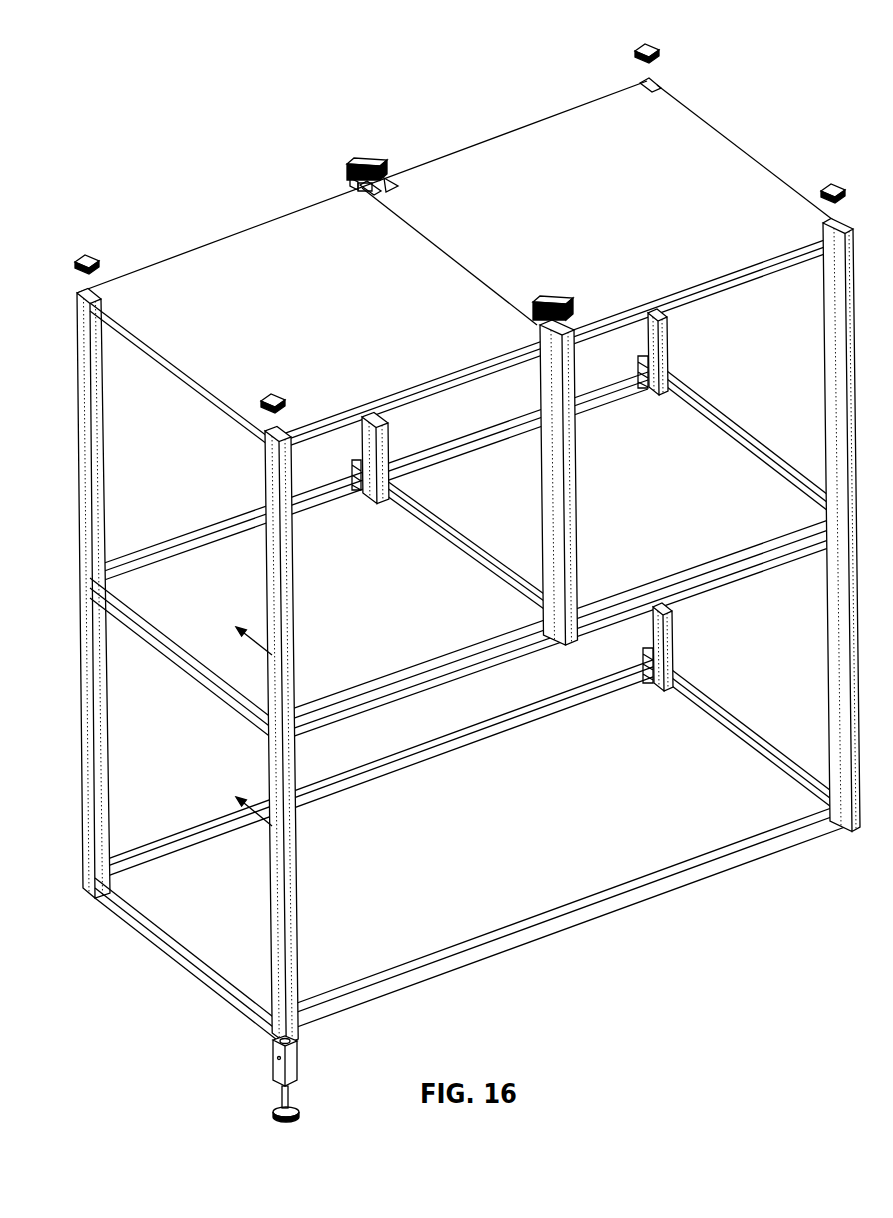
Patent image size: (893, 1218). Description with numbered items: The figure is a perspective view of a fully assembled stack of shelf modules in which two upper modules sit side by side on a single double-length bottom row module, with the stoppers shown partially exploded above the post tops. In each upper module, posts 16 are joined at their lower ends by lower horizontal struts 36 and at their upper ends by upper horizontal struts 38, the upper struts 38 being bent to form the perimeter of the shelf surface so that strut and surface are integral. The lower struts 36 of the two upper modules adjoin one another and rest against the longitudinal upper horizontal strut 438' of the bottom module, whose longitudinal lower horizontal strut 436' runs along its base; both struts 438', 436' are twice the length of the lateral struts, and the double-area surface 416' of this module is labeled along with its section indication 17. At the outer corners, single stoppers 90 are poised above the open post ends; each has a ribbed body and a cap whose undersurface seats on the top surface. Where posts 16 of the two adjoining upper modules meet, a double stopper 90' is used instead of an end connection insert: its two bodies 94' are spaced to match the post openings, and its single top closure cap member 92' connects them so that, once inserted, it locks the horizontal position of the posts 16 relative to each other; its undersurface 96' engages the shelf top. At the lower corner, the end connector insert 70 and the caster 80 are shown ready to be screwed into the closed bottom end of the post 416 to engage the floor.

The post 16 is at (543, 480).
The section view arrows 17 is at (239, 717).
The lower horizontal strut 36 is at (460, 528).
The upper horizontal strut 38 is at (180, 379).
The end connector insert 70 is at (300, 1060).
The caster 80 is at (300, 1106).
The stopper 90 is at (460, 207).
The double stopper 90' is at (467, 213).
The top closure cap member 92' is at (345, 138).
The body 94' is at (307, 168).
The cap tab 96' is at (420, 154).
The post 416 is at (325, 735).
The shelf 416' is at (472, 479).
The longitudinal lower horizontal strut 436' is at (474, 846).
The longitudinal upper horizontal strut 438' is at (563, 642).